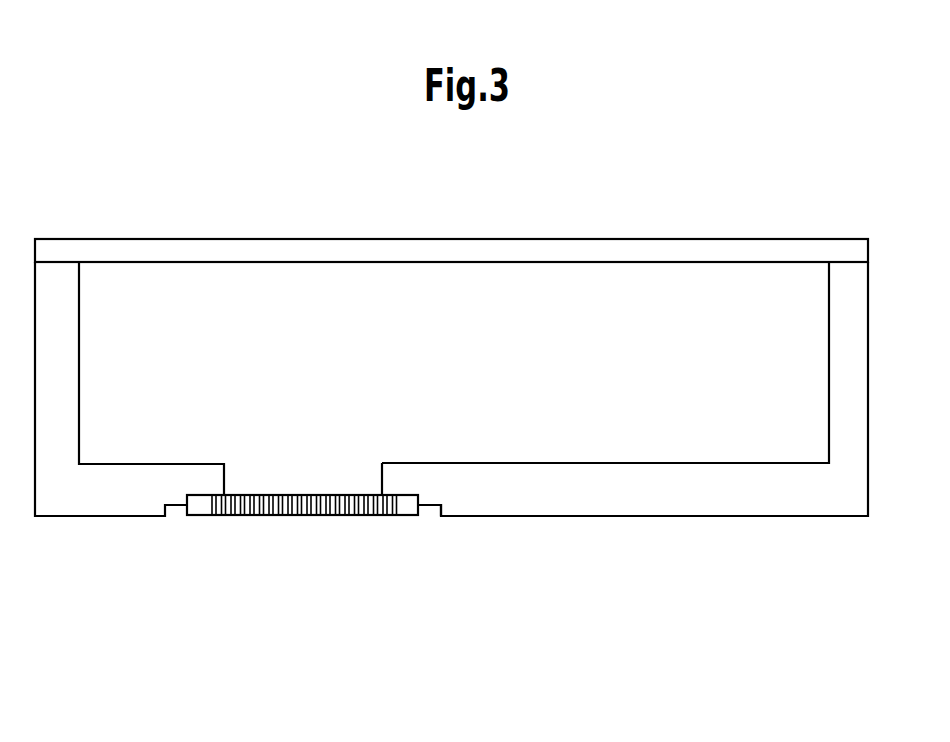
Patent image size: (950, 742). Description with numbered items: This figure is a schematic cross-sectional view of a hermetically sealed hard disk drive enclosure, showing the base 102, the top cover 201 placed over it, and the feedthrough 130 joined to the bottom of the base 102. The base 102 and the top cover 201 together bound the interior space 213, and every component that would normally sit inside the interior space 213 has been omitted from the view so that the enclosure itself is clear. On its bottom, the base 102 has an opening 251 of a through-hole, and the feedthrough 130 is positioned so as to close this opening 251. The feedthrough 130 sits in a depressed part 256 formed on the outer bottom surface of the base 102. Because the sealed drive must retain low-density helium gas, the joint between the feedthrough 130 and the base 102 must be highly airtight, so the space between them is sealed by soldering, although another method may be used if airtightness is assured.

The top cover 201 is at (320, 240).
The base 102 is at (670, 516).
The interior space 213 is at (533, 428).
The opening 251 is at (381, 472).
The feedthrough 130 is at (262, 517).
The depressed part 256 is at (408, 537).